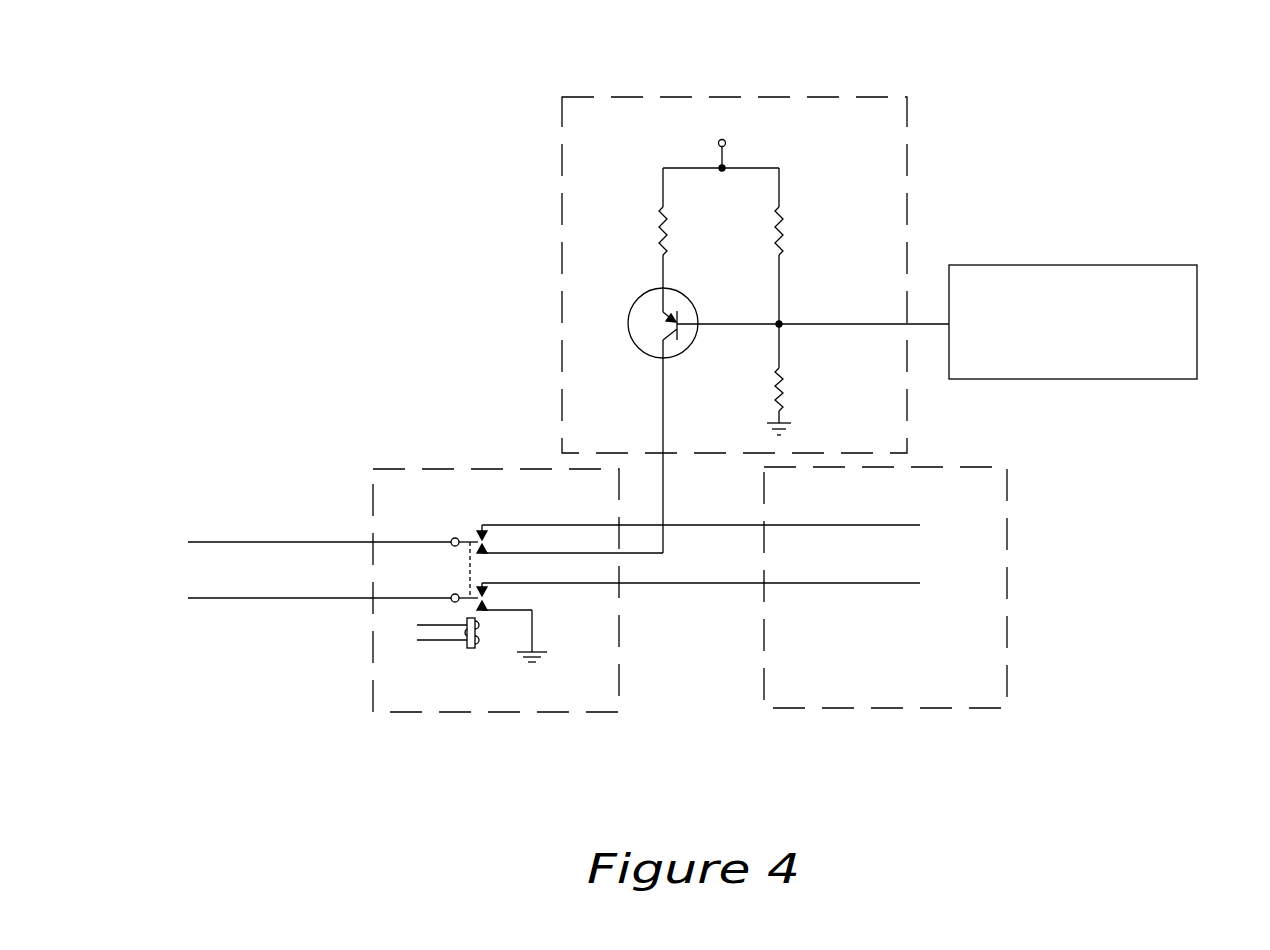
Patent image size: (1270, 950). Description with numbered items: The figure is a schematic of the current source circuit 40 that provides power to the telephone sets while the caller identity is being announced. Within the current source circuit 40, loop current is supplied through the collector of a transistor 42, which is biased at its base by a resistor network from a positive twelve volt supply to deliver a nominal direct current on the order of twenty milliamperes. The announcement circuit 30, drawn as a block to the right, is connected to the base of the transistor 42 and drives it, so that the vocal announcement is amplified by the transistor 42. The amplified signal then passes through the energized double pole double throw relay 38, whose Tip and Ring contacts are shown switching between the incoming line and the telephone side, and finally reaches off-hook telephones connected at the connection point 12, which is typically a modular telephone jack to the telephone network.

The connection point 12 is at (882, 698).
The announcement circuit 30 is at (1129, 270).
The double pole double throw relay 38 is at (447, 478).
The current source circuit 40 is at (702, 287).
The transistor 42 is at (628, 305).